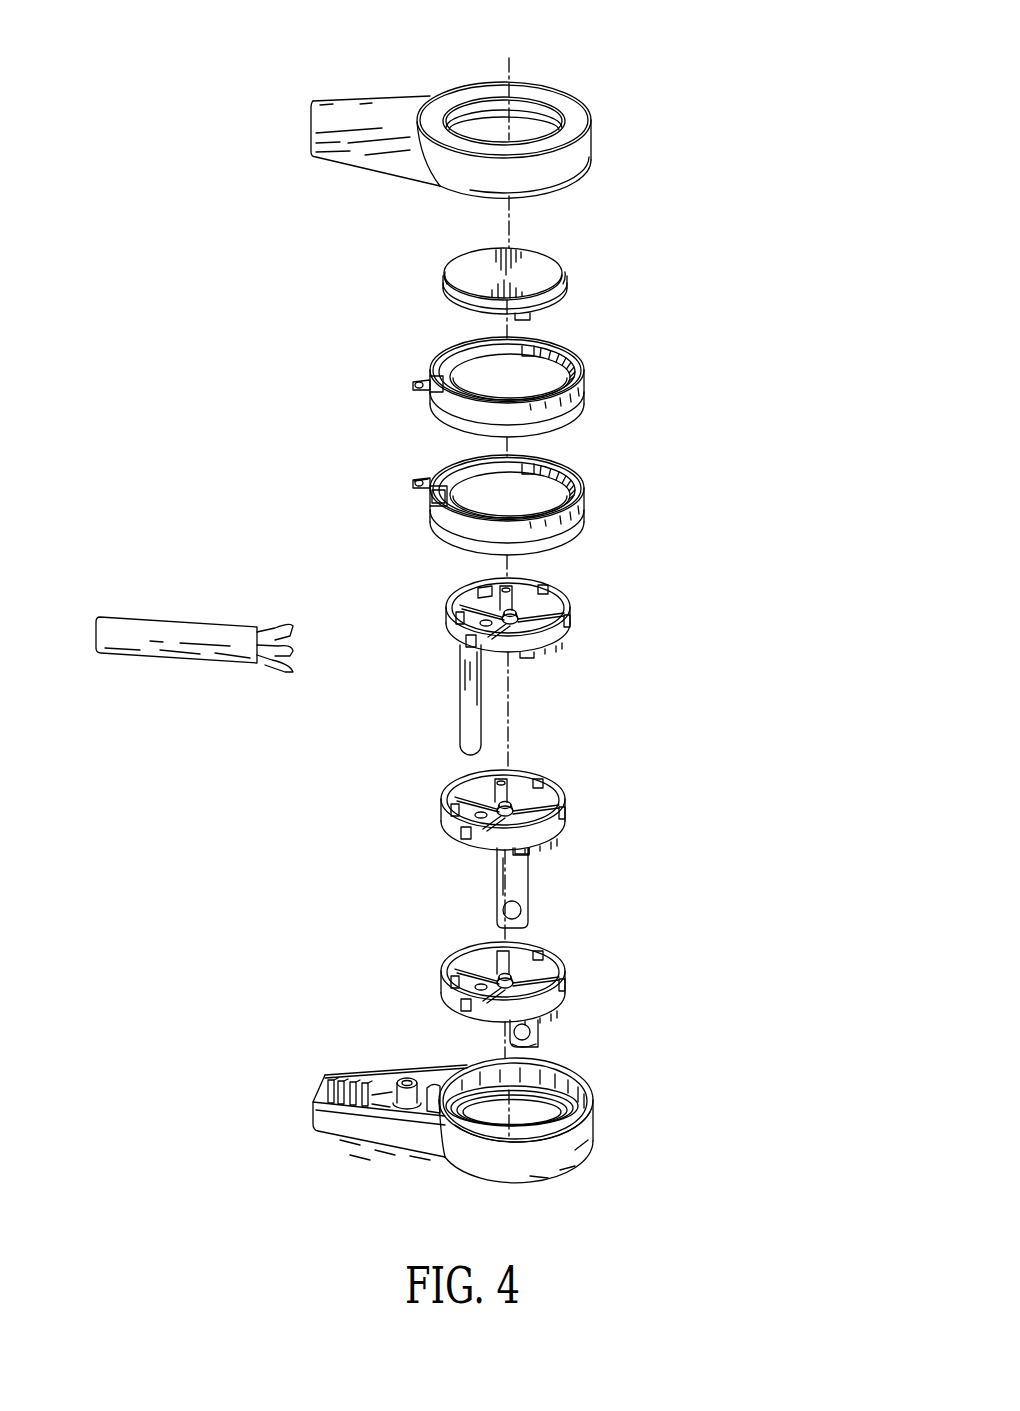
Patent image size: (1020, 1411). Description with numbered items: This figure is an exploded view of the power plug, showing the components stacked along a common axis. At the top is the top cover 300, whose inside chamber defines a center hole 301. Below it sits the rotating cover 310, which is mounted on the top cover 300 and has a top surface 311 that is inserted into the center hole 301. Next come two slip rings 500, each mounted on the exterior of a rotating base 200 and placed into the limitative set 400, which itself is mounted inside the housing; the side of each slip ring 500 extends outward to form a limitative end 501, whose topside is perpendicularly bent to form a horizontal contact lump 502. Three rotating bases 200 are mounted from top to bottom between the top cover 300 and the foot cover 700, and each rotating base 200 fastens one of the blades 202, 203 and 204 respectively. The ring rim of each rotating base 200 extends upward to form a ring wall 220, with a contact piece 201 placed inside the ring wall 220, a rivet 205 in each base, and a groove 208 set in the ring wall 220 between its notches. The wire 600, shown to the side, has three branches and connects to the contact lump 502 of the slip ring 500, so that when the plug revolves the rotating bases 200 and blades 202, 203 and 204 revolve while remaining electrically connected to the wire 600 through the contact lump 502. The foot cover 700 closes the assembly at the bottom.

The top cover 300 is at (598, 118).
The center hole 301 is at (520, 123).
The rotating cover 310 is at (572, 270).
The top surface 311 is at (470, 272).
The limitative set 400 is at (583, 382).
The slip ring 500 is at (447, 356).
The limitative end 501 is at (437, 496).
The contact lump 502 is at (412, 483).
The wire 600 is at (170, 608).
The rotating base 200 is at (578, 611).
The contact piece 201 is at (455, 790).
The blade 202 is at (472, 715).
The blade 203 is at (515, 888).
The blade 204 is at (547, 1018).
The rivet 205 is at (475, 590).
The groove 208 is at (547, 587).
The ring wall 220 is at (558, 635).
The foot cover 700 is at (606, 1111).